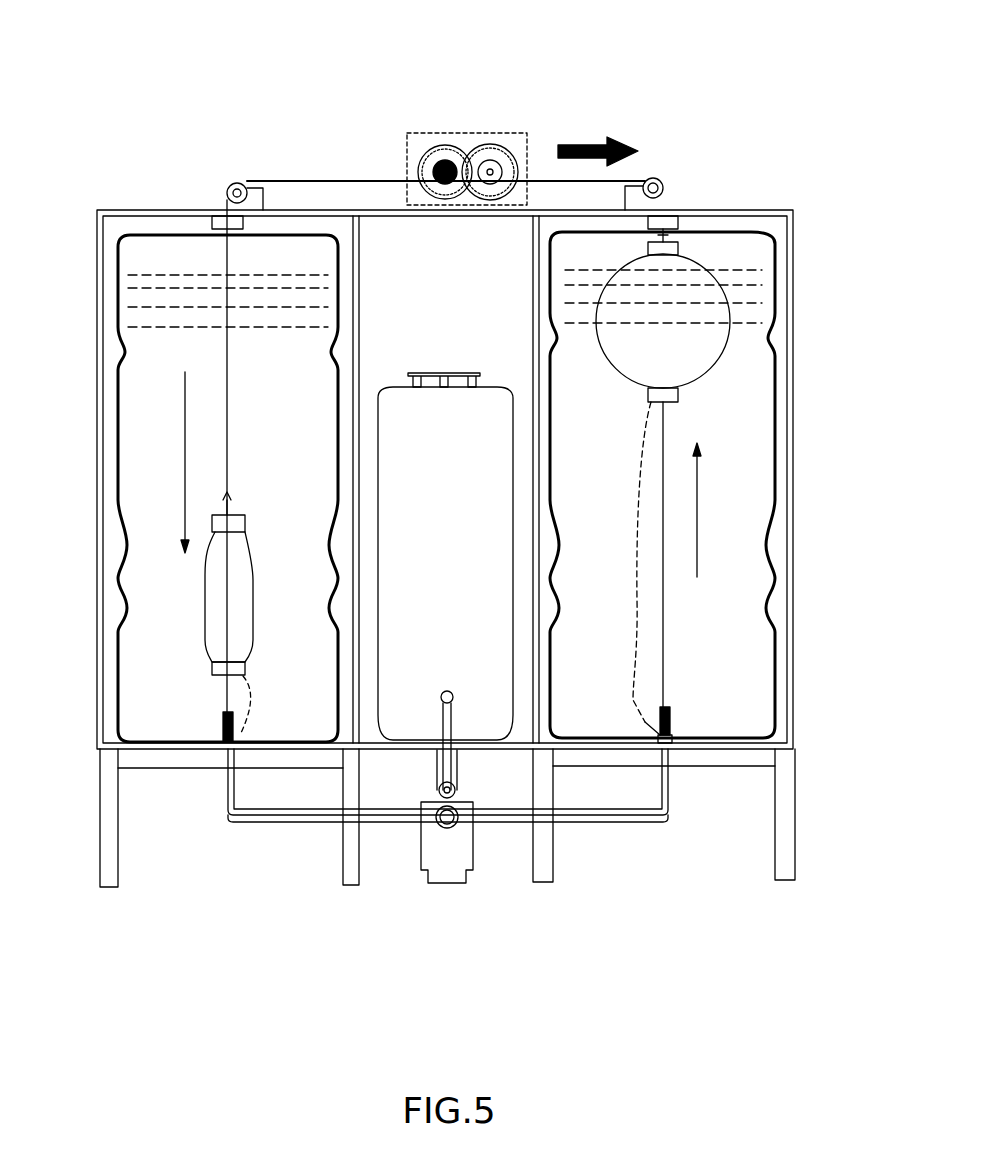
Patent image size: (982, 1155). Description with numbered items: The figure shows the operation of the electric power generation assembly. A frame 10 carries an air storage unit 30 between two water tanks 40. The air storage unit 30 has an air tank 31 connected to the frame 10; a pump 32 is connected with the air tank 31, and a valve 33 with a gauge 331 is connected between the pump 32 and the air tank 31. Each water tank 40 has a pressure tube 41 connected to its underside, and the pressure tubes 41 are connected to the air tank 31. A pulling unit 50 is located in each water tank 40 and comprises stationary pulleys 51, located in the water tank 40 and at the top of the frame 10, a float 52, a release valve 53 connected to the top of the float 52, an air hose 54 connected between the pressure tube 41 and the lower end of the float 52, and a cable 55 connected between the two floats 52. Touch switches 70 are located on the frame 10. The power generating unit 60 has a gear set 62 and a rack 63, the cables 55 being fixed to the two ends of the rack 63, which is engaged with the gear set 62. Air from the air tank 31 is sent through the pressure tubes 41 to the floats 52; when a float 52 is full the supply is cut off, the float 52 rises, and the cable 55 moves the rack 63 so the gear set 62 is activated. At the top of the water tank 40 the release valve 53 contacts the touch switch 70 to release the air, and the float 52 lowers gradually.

The frame 10 is at (95, 246).
The air storage unit 30 is at (498, 855).
The air tank 31 is at (400, 688).
The pump 32 is at (437, 860).
The valve 33 is at (465, 830).
The gauge 331 is at (455, 788).
The water tank 40 is at (778, 708).
The pressure tube 41 is at (627, 822).
The pulling unit 50 is at (727, 437).
The stationary pulley 51 is at (650, 178).
The float 52 is at (715, 362).
The release valve 53 is at (668, 238).
The air hose 54 is at (640, 652).
The cable 55 is at (665, 425).
The power generating unit 60 is at (446, 103).
The gear set 62 is at (498, 130).
The rack 63 is at (543, 180).
The touch switch 70 is at (683, 213).